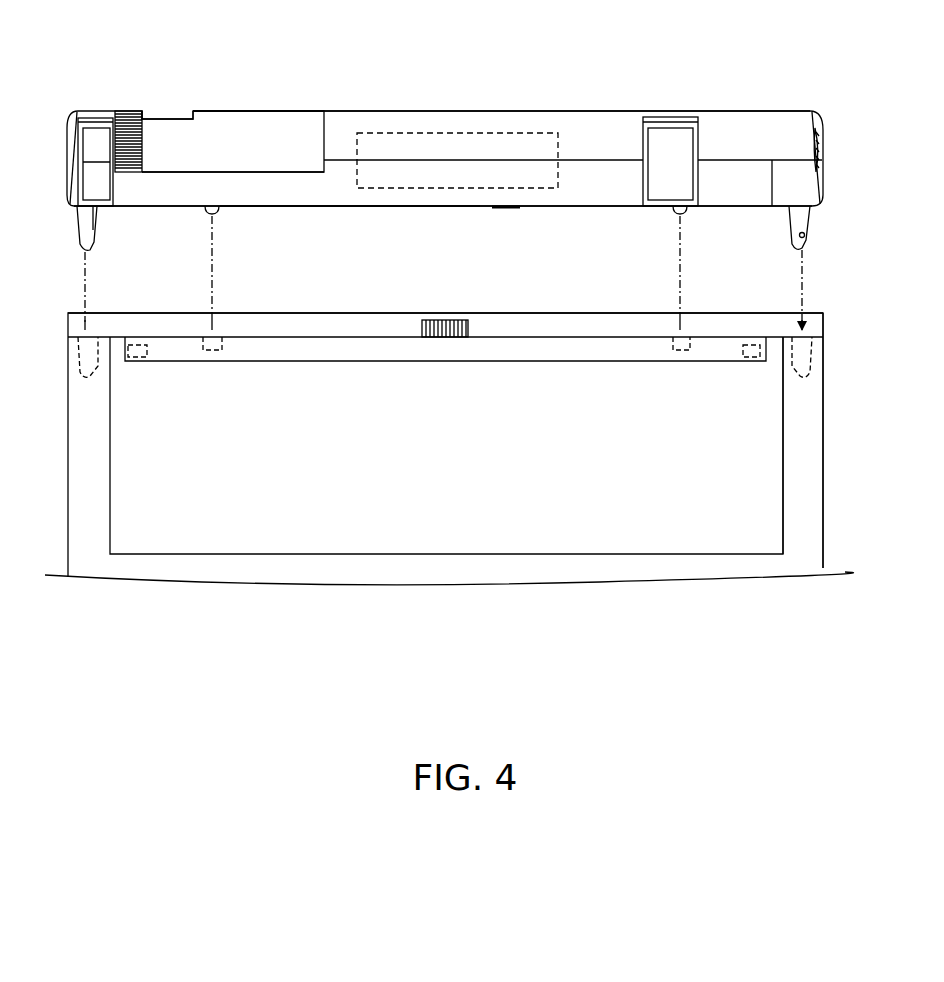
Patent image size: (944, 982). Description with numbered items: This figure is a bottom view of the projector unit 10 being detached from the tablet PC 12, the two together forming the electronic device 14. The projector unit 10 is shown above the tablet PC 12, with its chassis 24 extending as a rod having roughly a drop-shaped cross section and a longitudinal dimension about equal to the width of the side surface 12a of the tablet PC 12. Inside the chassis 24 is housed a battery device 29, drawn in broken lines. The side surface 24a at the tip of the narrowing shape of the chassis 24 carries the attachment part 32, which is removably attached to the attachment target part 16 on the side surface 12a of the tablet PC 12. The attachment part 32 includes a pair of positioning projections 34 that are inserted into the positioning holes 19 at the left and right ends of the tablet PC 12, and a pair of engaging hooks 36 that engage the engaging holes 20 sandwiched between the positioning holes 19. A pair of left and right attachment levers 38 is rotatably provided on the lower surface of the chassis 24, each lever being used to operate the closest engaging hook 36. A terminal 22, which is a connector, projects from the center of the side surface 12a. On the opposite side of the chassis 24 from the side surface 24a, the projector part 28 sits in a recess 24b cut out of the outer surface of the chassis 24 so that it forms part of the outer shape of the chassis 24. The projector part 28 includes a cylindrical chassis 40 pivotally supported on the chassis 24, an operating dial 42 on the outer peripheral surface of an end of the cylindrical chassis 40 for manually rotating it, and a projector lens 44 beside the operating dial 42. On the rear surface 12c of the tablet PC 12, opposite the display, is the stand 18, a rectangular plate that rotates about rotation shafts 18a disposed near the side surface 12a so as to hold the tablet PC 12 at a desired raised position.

The projector unit 10 is at (556, 98).
The tablet PC 12 is at (828, 425).
The side surface 12a is at (537, 334).
The rear surface 12c is at (806, 537).
The electronic device 14 is at (87, 37).
The attachment target part 16 is at (719, 324).
The stand 18 is at (768, 464).
The rotation shafts 18a is at (138, 357).
The positioning holes 19 is at (100, 368).
The engaging holes 20 is at (212, 350).
The terminal 22 is at (462, 320).
The chassis 24 is at (755, 110).
The side surface 24a is at (250, 208).
The recess 24b is at (302, 170).
The projector part 28 is at (265, 110).
The battery device 29 is at (465, 133).
The attachment part 32 is at (148, 216).
The positioning projections 34 is at (85, 226).
The engaging hooks 36 is at (207, 215).
The attachment levers 38 is at (97, 140).
The cylindrical chassis 40 is at (212, 111).
The operating dial 42 is at (137, 111).
The projector lens 44 is at (172, 119).